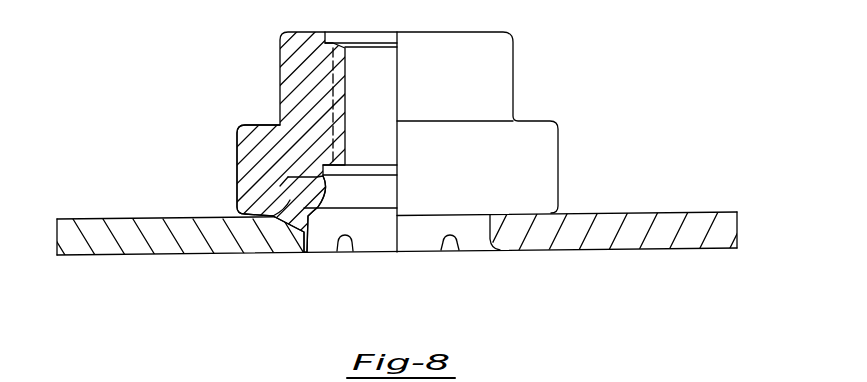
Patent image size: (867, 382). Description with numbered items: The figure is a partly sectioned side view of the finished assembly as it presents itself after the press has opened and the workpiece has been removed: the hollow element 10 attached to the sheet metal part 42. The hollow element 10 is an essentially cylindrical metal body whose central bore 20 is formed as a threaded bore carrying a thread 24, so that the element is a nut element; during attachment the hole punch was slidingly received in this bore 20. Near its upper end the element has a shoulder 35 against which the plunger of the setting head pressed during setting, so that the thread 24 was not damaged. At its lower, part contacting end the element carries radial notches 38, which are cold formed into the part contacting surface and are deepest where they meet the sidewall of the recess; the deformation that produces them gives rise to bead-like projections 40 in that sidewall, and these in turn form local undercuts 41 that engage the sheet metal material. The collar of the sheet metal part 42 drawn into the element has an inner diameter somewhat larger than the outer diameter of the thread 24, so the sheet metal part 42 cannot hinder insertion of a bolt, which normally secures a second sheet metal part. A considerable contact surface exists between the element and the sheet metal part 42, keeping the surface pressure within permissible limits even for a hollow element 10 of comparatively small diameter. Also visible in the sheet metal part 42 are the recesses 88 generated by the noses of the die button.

The hollow element 10 is at (327, 129).
The bore 20 is at (346, 100).
The thread 24 is at (260, 129).
The shoulder 35 is at (527, 120).
The radial notches 38 is at (287, 210).
The bead-like projections 40 is at (288, 198).
The local undercuts 41 is at (250, 126).
The sheet metal part 42 is at (587, 262).
The recesses 88 is at (343, 251).